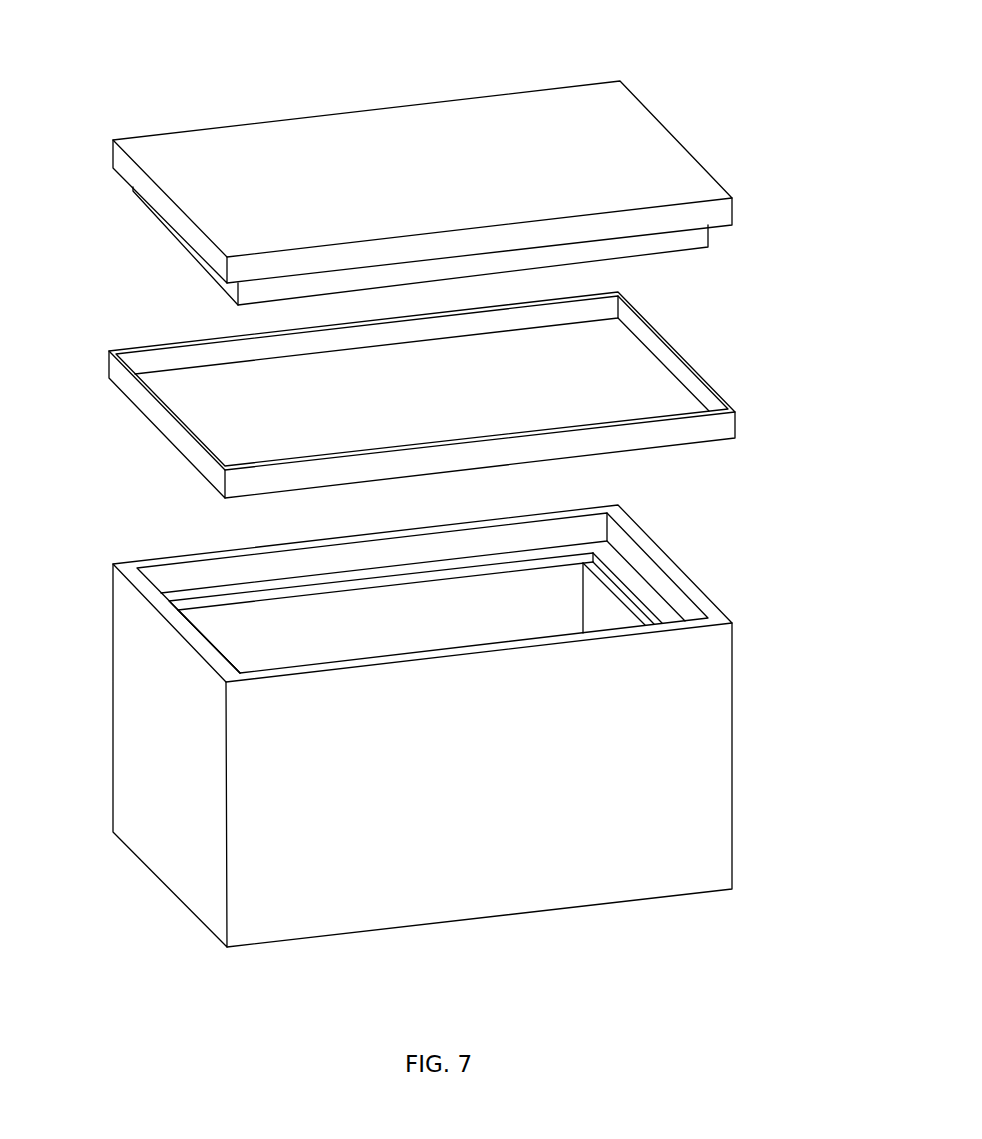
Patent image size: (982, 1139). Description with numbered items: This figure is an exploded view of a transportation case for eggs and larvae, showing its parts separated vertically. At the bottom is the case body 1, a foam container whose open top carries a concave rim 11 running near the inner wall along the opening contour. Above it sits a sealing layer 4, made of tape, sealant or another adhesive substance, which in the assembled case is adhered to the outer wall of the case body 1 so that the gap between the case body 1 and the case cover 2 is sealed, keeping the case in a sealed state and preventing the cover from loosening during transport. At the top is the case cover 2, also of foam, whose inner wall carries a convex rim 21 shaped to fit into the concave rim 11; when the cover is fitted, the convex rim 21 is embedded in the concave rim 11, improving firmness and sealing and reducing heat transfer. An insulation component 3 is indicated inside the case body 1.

The case body 1 is at (515, 873).
The case cover 2 is at (358, 142).
The convex rim 21 is at (668, 240).
The insulation component 3 is at (227, 618).
The sealing layer 4 is at (160, 415).
The concave rim 11 is at (645, 598).